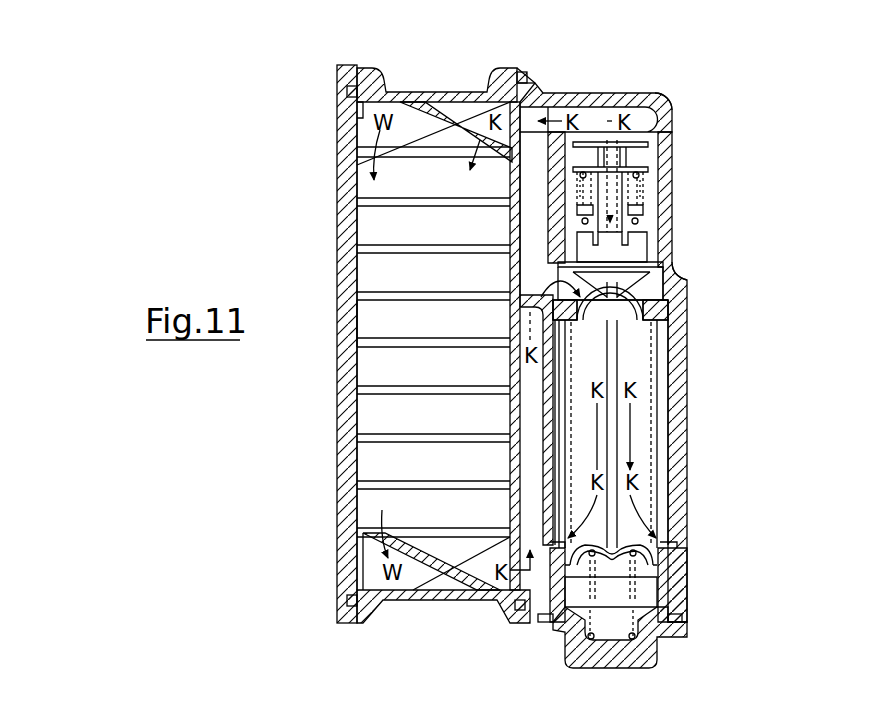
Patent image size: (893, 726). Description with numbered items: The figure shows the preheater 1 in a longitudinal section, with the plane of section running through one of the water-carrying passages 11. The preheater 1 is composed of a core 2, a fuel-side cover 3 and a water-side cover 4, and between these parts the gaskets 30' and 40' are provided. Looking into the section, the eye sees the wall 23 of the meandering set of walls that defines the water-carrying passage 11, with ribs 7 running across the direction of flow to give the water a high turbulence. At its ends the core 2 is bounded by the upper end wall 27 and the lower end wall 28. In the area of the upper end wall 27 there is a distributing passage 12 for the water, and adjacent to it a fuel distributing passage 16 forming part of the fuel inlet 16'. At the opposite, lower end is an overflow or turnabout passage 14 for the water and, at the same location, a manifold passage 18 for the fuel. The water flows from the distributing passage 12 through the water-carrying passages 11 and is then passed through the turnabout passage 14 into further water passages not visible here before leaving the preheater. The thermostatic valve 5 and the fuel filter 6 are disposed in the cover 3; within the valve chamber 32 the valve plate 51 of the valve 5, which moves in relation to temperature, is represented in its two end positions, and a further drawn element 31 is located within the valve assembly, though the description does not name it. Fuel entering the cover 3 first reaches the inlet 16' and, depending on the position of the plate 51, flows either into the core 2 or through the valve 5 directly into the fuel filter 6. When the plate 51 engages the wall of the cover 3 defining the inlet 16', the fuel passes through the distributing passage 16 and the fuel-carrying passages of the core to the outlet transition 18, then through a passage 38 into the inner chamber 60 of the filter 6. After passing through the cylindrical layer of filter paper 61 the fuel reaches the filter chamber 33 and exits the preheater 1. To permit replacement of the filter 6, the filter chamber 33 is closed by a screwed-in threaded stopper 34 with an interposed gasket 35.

The preheater 1 is at (488, 62).
The core 2 is at (523, 175).
The fuel-side cover 3 is at (692, 287).
The water-side cover 4 is at (357, 400).
The thermostatic valve 5 is at (615, 185).
The fuel filter 6 is at (642, 489).
The ribs 7 is at (392, 478).
The water-carrying passage 11 is at (454, 275).
The distributing passage 12 is at (357, 120).
The overflow or turnabout passage 14 is at (372, 562).
The fuel distributing passage 16 is at (434, 92).
The inlet 16' is at (604, 87).
The manifold passage 18 is at (470, 585).
The wall 23 is at (392, 322).
The upper end wall 27 is at (400, 95).
The lower end wall 28 is at (400, 600).
The gasket 30' is at (549, 353).
The spring 31 is at (612, 222).
The valve chamber 32 is at (652, 192).
The filter chamber 33 is at (675, 465).
The threaded stopper 34 is at (678, 635).
The gasket 35 is at (680, 612).
The passage 38 is at (660, 418).
The gasket 40' is at (309, 352).
The valve plate 51 is at (660, 100).
The inner chamber 60 is at (670, 493).
The layer of filter paper 61 is at (657, 436).